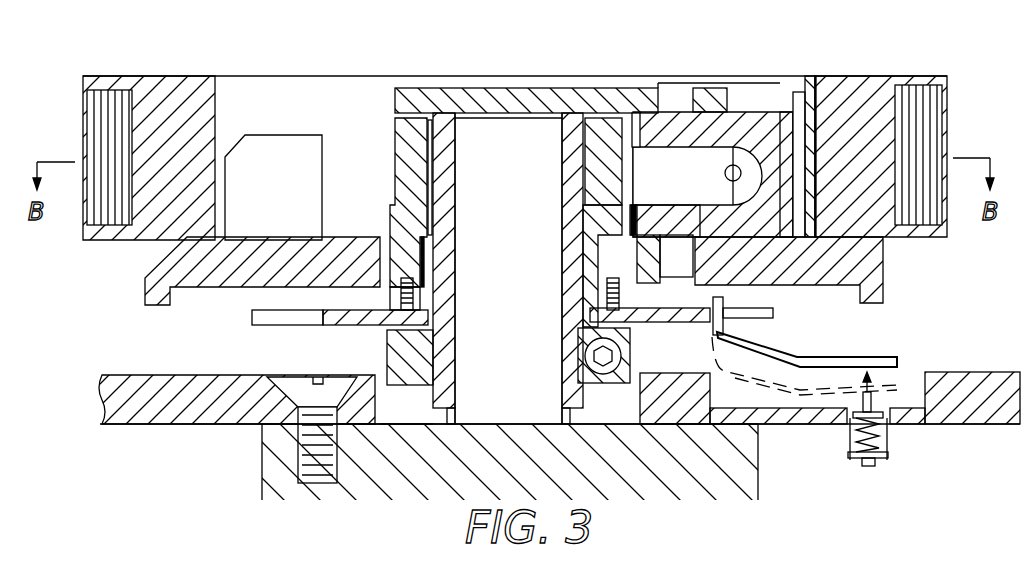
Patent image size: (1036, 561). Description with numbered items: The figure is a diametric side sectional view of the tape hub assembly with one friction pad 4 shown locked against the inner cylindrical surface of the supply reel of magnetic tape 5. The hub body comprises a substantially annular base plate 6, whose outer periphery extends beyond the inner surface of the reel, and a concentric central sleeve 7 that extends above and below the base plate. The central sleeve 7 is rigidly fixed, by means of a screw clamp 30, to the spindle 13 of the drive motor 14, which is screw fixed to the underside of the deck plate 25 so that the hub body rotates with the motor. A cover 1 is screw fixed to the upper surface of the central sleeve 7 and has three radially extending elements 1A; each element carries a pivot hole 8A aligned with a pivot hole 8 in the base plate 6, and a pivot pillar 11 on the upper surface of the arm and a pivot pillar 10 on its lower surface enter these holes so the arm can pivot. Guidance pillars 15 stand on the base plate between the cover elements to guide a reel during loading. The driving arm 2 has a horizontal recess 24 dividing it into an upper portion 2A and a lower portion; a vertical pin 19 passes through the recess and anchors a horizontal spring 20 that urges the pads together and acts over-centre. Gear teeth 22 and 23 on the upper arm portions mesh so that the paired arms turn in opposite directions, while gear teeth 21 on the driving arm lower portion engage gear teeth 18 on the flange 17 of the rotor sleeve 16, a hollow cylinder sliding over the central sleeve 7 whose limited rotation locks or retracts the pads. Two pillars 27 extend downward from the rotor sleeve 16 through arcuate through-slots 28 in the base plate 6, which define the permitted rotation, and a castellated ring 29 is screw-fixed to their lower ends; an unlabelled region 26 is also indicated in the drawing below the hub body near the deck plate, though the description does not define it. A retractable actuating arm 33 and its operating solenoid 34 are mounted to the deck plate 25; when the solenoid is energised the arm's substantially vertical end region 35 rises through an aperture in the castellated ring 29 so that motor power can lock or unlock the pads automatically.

The cover 1 is at (519, 97).
The radially extending elements of the cover 1A is at (710, 120).
The driving arm 2 is at (801, 113).
The upper portion of the driving arm 2A is at (755, 115).
The friction pad 4 is at (848, 97).
The supply reel of magnetic tape 5 is at (852, 95).
The base plate 6 is at (866, 270).
The central sleeve 7 is at (570, 125).
The pivot hole 8 is at (720, 312).
The pivot hole 8A is at (702, 92).
The pivot pillar 10 is at (668, 262).
The pivot pillar 11 is at (686, 115).
The spindle 13 is at (470, 117).
The drive motor 14 is at (612, 452).
The guidance pillar 15 is at (283, 150).
The rotor sleeve 16 is at (410, 158).
The flange 17 is at (392, 216).
The gear teeth 18 is at (633, 215).
The vertical pin 19 is at (732, 162).
The horizontal spring 20 is at (729, 179).
The gear teeth 21 is at (637, 215).
The gear teeth 22 is at (637, 112).
The gear teeth 23 is at (666, 206).
The horizontal recess 24 is at (620, 158).
The deck plate 25 is at (168, 423).
The opening 26 is at (410, 418).
The pillar 27 is at (398, 295).
The arcuate through-slot 28 is at (632, 252).
The castellated ring 29 is at (345, 326).
The screw clamp 30 is at (395, 352).
The actuating arm 33 is at (800, 356).
The operating solenoid 34 is at (852, 440).
The vertical end region 35 is at (728, 316).